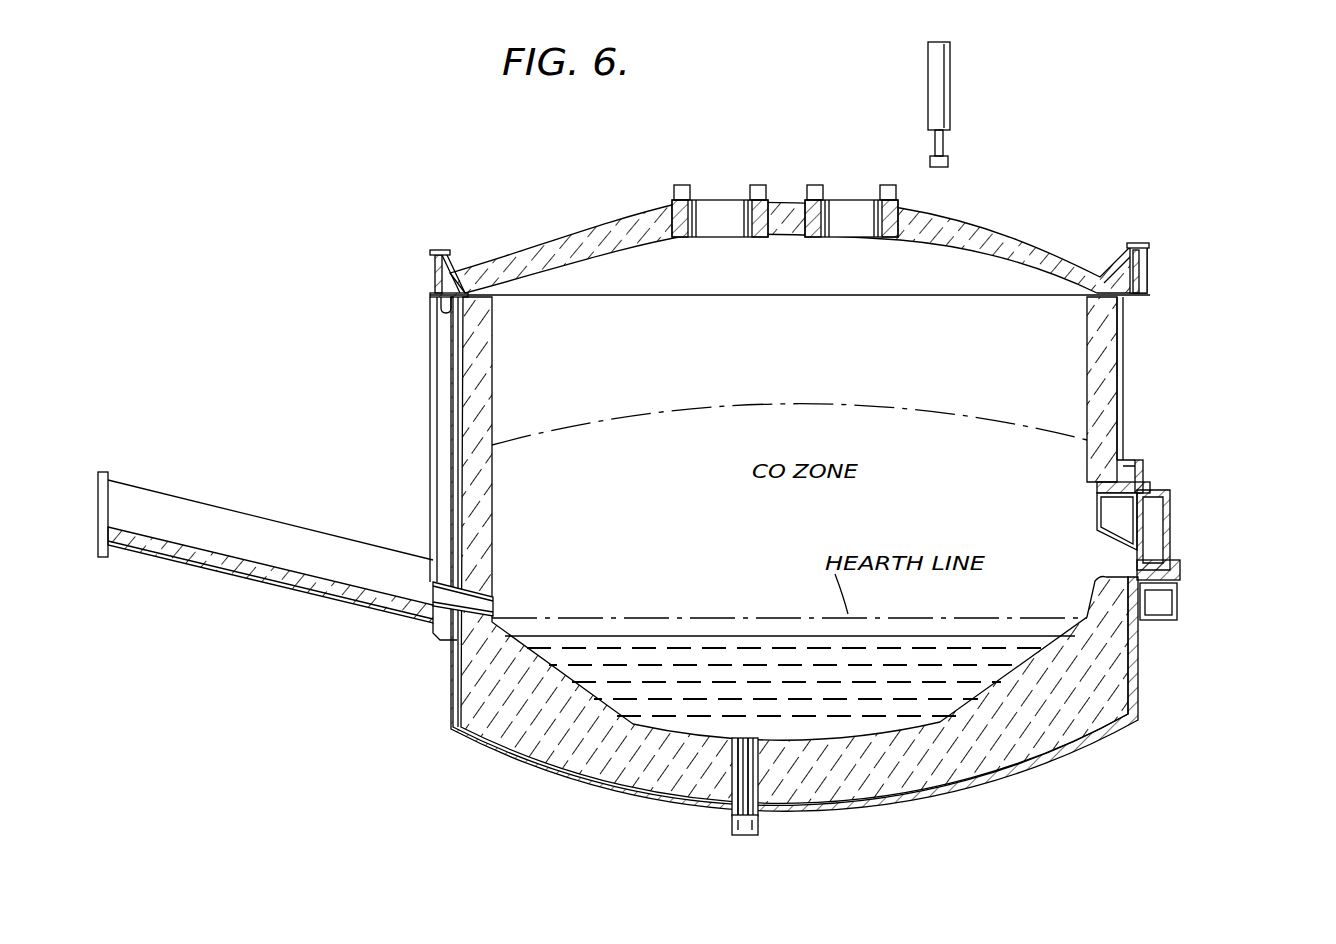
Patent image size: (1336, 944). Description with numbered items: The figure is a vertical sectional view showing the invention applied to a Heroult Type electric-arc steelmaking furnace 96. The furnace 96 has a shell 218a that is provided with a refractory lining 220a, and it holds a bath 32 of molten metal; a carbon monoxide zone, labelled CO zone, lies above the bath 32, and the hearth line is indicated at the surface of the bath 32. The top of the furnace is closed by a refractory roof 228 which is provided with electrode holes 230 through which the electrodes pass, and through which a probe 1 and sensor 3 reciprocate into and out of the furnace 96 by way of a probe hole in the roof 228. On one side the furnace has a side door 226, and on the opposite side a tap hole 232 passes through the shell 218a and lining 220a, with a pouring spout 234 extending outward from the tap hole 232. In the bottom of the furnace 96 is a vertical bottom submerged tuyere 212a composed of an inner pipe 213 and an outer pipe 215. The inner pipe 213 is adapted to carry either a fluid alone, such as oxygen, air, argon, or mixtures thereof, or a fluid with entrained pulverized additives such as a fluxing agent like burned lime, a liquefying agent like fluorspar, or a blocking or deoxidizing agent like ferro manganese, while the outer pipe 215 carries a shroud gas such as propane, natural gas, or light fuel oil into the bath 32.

The probe 1 is at (961, 92).
The sensor 3 is at (958, 158).
The bath 32 is at (992, 645).
The Heroult Type electric-arc steelmaking furnace 96 is at (1099, 245).
The vertical bottom submerged tuyere 212a is at (749, 846).
The inner pipe 213 is at (746, 738).
The outer pipe 215 is at (736, 738).
The shell 218a is at (1125, 370).
The refractory lining 220a is at (1110, 426).
The side door 226 is at (1172, 522).
The refractory roof 228 is at (1012, 232).
The electrode holes 230 is at (690, 213).
The tap hole 232 is at (492, 604).
The pouring spout 234 is at (265, 590).